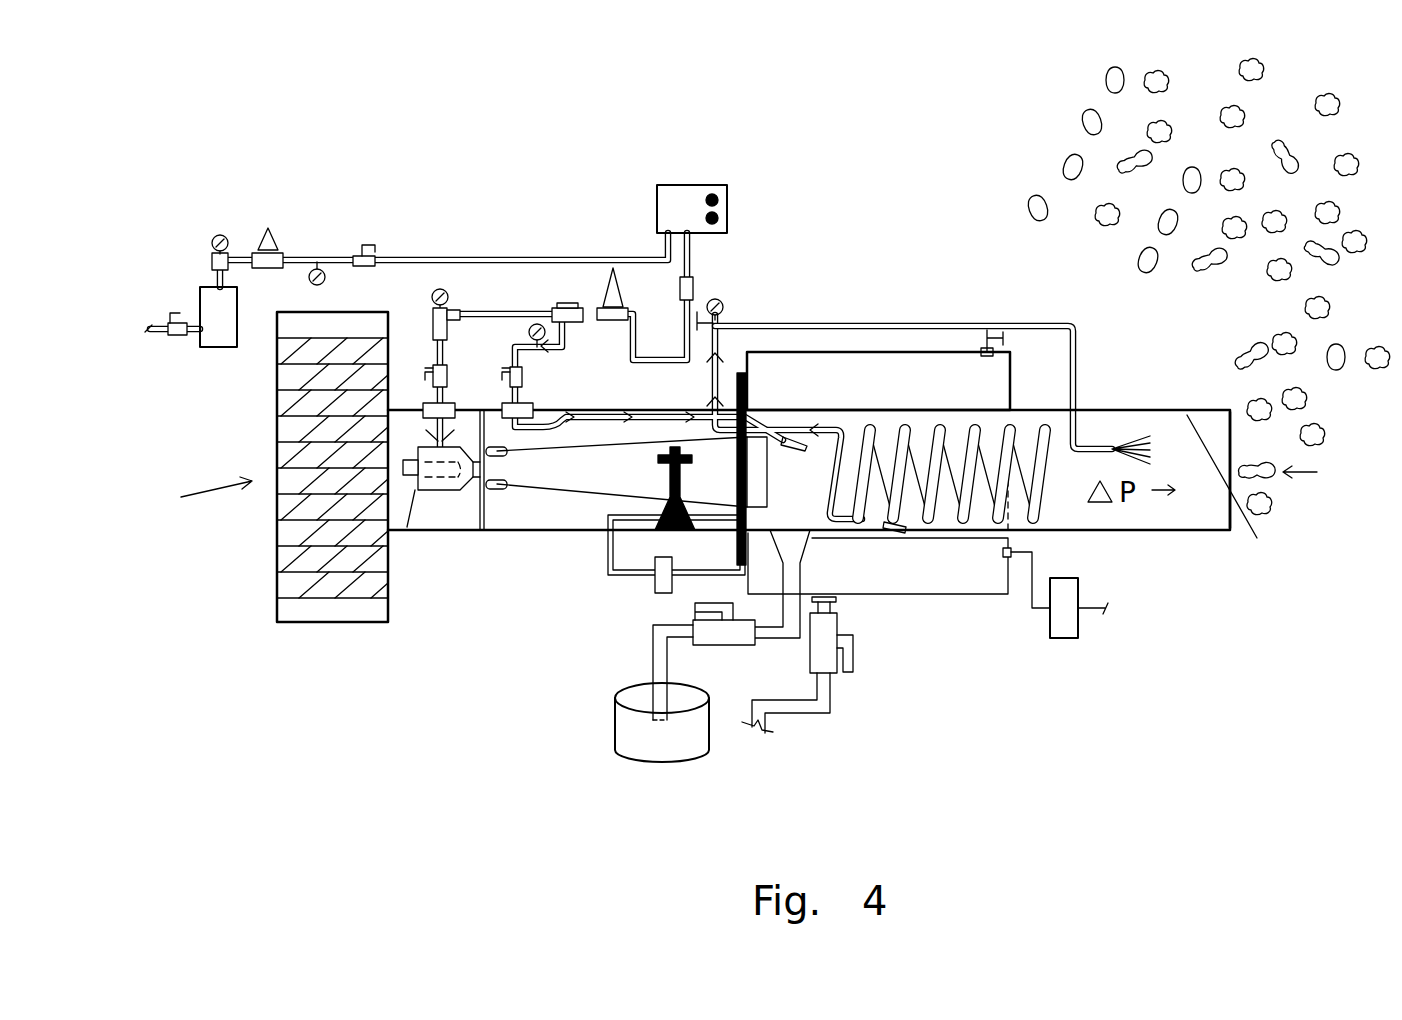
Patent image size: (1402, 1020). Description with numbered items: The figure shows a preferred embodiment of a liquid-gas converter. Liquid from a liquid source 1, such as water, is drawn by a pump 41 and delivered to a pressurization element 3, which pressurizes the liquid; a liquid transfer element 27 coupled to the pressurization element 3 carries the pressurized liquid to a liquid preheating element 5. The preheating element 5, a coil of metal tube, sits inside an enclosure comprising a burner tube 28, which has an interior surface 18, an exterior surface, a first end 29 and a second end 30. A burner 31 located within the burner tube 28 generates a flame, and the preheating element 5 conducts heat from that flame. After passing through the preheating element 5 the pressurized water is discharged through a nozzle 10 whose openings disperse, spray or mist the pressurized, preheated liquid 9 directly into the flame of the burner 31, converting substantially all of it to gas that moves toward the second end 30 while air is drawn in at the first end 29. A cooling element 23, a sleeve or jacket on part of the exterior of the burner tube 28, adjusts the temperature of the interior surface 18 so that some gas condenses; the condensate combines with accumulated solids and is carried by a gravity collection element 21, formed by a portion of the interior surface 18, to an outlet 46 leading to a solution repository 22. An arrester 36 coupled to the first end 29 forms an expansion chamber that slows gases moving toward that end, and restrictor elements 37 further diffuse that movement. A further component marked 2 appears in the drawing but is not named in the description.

The liquid source 1 is at (1150, 638).
The particles 2 is at (1152, 194).
The pressurization element 3 is at (643, 578).
The liquid preheating element 5 is at (943, 527).
The pressurized, preheated liquid 9 is at (1143, 438).
The nozzle 10 is at (1112, 447).
The interior surface 18 is at (1234, 491).
The gravity collection element 21 is at (907, 533).
The solution repository 22 is at (655, 740).
The cooling element 23 is at (993, 575).
The liquid transfer element 27 is at (1032, 579).
The burner tube 28 is at (1201, 410).
The first end 29 is at (197, 493).
The second end 30 is at (1296, 487).
The burner 31 is at (598, 473).
The arrester 36 is at (340, 580).
The restrictor elements 37 is at (275, 411).
The pump 41 is at (1077, 638).
The outlet 46 is at (783, 565).